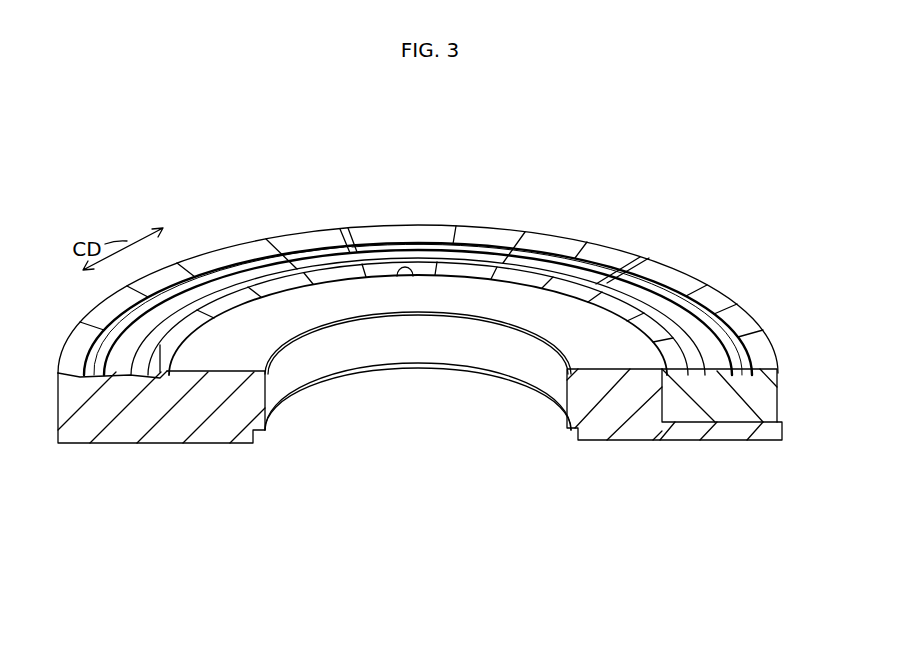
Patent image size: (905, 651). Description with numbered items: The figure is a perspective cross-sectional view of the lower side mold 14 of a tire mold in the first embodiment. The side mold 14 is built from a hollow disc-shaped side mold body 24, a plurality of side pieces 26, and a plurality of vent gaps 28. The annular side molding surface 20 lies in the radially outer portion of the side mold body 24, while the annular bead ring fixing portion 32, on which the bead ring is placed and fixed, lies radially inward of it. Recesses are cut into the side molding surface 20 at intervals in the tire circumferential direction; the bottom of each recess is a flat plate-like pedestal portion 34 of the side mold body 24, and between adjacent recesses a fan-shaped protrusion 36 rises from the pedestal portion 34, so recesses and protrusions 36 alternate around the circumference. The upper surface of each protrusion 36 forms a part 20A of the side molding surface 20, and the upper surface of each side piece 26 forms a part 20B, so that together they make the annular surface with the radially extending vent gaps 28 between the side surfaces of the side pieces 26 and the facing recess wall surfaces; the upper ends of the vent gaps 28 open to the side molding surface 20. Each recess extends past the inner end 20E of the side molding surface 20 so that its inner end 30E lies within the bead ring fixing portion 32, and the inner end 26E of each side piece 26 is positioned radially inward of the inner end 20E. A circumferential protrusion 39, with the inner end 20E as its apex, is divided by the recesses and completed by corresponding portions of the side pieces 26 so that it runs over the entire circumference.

The side mold 14 is at (381, 137).
The side molding surface 20 is at (313, 245).
The part of the side molding surface on the protrusion 20A is at (441, 247).
The part of the side molding surface on the side piece 20B is at (557, 243).
The inner end of the side molding surface 20E is at (344, 243).
The side mold body 24 is at (340, 368).
The side piece 26 is at (88, 316).
The inner end of the side piece 26E is at (183, 318).
The vent gap 28 is at (270, 245).
The inner end of the recess 30E is at (410, 278).
The bead ring fixing portion 32 is at (485, 305).
The pedestal portion 34 is at (738, 441).
The protrusion 36 is at (483, 235).
The protrusion 39 is at (649, 256).